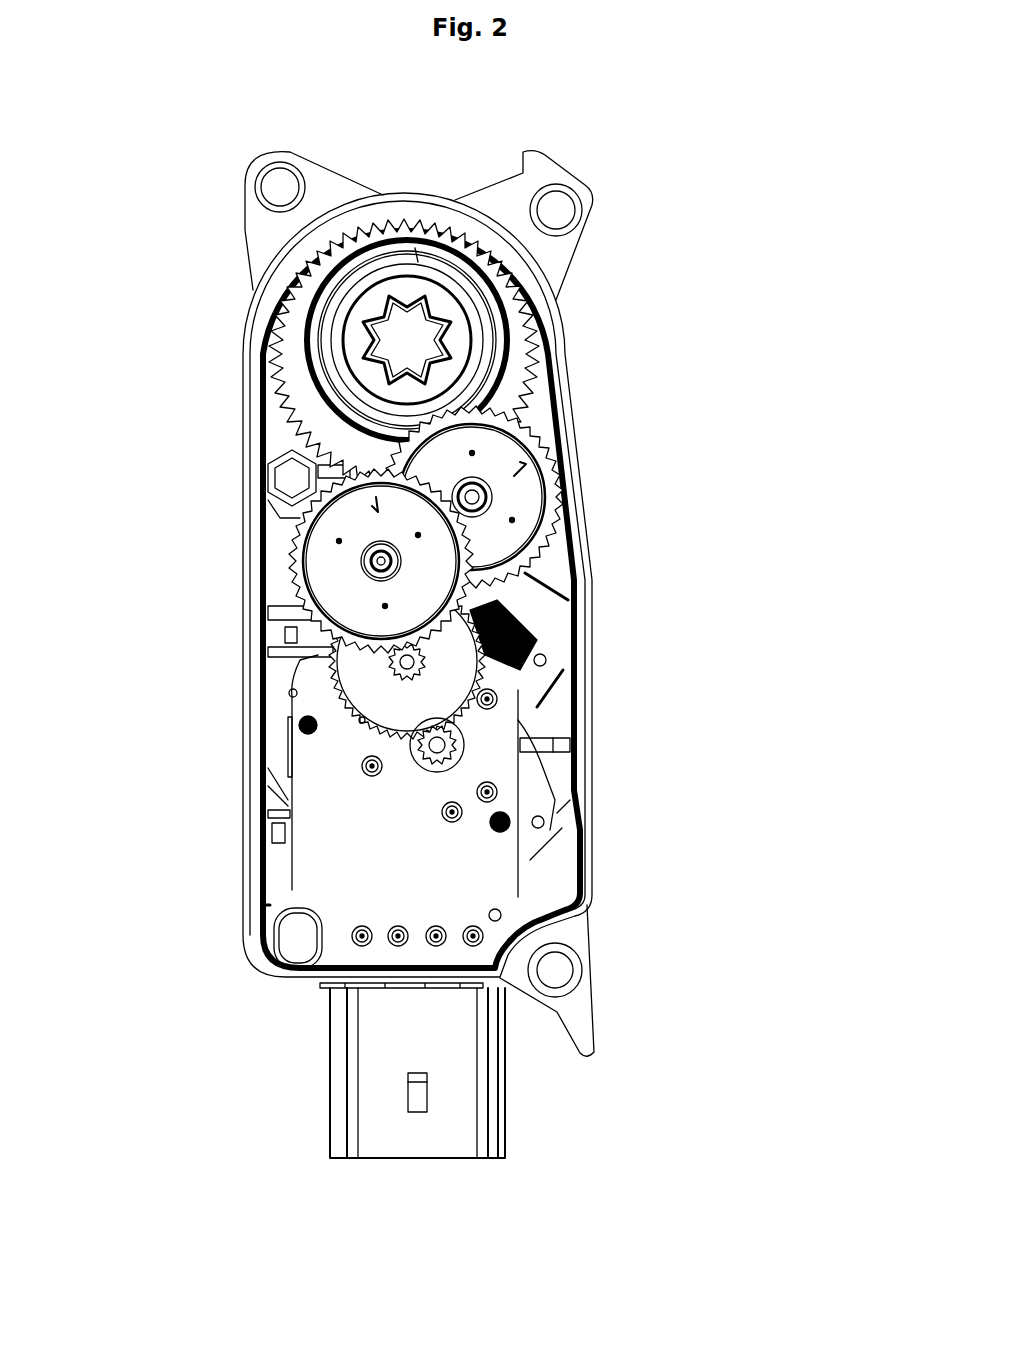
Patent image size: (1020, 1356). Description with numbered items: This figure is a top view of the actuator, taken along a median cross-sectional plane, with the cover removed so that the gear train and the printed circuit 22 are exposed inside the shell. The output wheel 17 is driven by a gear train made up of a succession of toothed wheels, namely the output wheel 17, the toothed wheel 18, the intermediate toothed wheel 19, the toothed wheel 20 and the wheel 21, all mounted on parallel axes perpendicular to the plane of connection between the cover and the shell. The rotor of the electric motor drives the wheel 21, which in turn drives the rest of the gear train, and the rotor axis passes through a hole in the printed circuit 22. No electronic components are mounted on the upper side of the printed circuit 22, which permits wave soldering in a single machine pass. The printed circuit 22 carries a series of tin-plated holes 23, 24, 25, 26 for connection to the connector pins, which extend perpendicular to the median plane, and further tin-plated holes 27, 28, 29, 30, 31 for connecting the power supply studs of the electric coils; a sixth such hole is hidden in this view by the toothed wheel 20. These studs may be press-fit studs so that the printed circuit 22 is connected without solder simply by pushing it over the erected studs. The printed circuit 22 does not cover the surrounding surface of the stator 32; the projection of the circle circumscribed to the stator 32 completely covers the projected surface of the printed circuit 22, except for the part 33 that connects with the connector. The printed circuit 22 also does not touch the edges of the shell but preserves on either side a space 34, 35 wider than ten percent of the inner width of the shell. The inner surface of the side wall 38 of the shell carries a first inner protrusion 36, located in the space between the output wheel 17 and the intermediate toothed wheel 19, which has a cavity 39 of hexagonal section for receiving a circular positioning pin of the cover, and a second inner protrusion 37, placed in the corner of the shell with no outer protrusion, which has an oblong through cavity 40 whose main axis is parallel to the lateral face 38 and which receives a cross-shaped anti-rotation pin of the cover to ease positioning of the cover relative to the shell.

The output wheel 17 is at (513, 320).
The toothed wheel 18 is at (510, 490).
The intermediate toothed wheel 19 is at (330, 552).
The toothed wheel 20 is at (440, 645).
The wheel 21 is at (463, 744).
The printed circuit 22 is at (548, 922).
The tin-plated hole 23 is at (362, 938).
The tin-plated hole 24 is at (398, 938).
The tin-plated hole 25 is at (436, 938).
The tin-plated hole 26 is at (473, 938).
The tin-plated hole 27 is at (498, 688).
The tin-plated hole 28 is at (498, 783).
The tin-plated hole 29 is at (458, 812).
The tin-plated hole 30 is at (358, 757).
The tin-plated hole 31 is at (362, 720).
The stator 32 is at (267, 688).
The part of the printed circuit connecting with the connector 33 is at (518, 938).
The space 34 is at (280, 850).
The space 35 is at (560, 880).
The first inner protrusion 36 is at (270, 428).
The second inner protrusion 37 is at (267, 902).
The side wall 38 is at (268, 510).
The cavity 39 is at (283, 462).
The oblong through cavity 40 is at (285, 940).